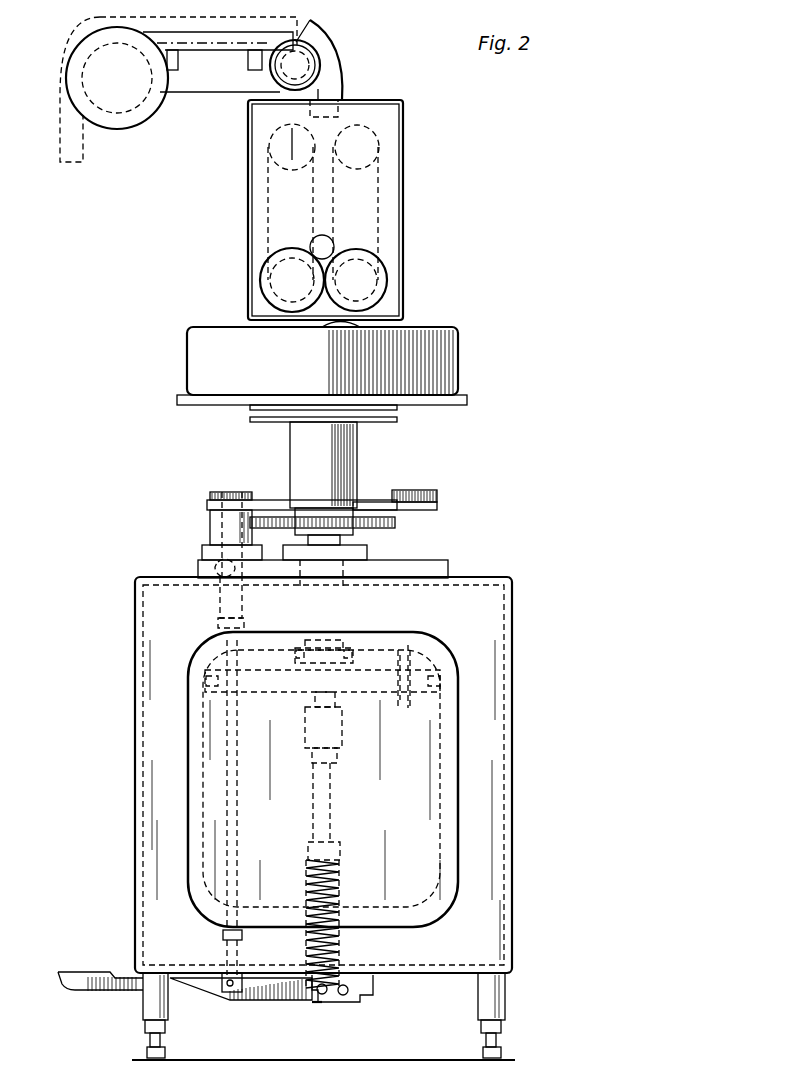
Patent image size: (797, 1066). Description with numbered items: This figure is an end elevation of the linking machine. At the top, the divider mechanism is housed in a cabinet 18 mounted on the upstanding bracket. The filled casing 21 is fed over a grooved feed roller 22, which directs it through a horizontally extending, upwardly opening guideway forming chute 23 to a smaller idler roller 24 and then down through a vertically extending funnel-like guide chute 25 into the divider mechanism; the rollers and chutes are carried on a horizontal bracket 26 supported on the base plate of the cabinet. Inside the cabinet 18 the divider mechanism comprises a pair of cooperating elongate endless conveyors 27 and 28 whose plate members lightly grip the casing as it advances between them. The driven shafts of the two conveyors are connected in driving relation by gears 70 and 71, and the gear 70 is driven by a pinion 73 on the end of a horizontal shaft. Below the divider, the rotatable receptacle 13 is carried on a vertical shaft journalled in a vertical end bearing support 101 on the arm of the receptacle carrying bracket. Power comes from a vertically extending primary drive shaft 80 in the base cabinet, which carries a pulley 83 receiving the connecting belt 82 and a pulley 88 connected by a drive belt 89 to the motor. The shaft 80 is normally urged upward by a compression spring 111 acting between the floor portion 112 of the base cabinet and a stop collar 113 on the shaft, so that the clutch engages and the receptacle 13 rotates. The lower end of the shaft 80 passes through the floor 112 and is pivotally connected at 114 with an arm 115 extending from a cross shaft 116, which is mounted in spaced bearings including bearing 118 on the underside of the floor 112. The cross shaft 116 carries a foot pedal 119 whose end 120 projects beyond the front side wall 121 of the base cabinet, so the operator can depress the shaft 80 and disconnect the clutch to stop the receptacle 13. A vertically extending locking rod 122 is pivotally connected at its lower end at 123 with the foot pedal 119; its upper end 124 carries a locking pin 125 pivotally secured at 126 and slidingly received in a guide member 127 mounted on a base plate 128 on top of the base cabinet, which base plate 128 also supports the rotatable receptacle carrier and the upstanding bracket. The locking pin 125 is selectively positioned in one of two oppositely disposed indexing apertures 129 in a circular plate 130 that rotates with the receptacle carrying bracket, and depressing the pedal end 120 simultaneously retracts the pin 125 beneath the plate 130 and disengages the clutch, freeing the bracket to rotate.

The receptacle 13 is at (458, 357).
The cabinet 18 is at (404, 114).
The filled casing 21 is at (58, 137).
The grooved feed roller 22 is at (68, 82).
The guideway forming chute 23 is at (223, 33).
The idler roller 24 is at (307, 53).
The funnel-like guide chute 25 is at (332, 77).
The horizontal bracket 26 is at (195, 86).
The endless conveyor 27 is at (268, 189).
The endless conveyor 28 is at (372, 201).
The gear 70 is at (260, 281).
The gear 71 is at (388, 279).
The pinion 73 is at (335, 243).
The primary drive shaft 80 is at (335, 700).
The connecting belt 82 is at (412, 648).
The pulley 83 is at (345, 649).
The pulley 88 is at (400, 705).
The drive belt 89 is at (443, 686).
The end bearing support 101 is at (332, 457).
The compression spring 111 is at (342, 875).
The floor portion 112 is at (416, 970).
The stop collar 113 is at (342, 846).
The pivotal connection 114 is at (314, 1004).
The arm 115 is at (322, 996).
The cross shaft 116 is at (344, 998).
The bearing 118 is at (362, 996).
The foot pedal 119 is at (292, 1000).
The pedal end 120 is at (85, 992).
The front side wall 121 is at (135, 804).
The locking rod 122 is at (240, 781).
The pivotal connection 123 is at (228, 995).
The upper end 124 is at (220, 604).
The locking pin 125 is at (207, 500).
The pivotal connection 126 is at (215, 567).
The guide member 127 is at (210, 522).
The base plate 128 is at (405, 560).
The indexing apertures 129 is at (233, 492).
The circular plate 130 is at (405, 492).